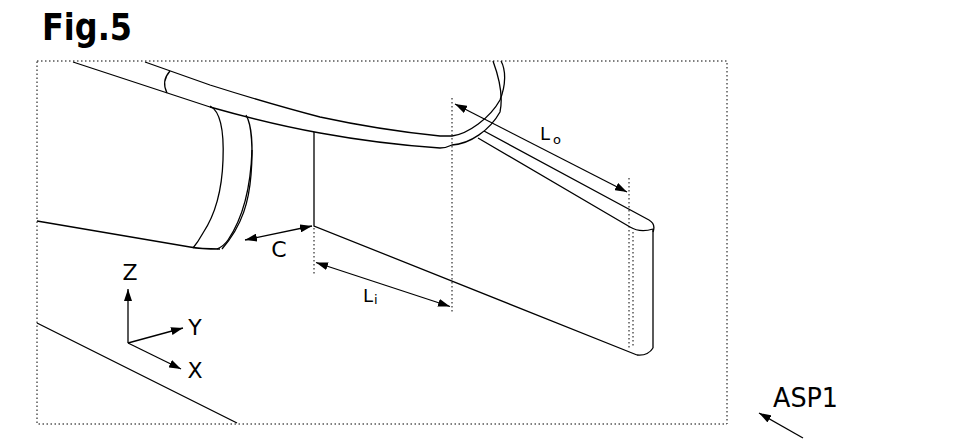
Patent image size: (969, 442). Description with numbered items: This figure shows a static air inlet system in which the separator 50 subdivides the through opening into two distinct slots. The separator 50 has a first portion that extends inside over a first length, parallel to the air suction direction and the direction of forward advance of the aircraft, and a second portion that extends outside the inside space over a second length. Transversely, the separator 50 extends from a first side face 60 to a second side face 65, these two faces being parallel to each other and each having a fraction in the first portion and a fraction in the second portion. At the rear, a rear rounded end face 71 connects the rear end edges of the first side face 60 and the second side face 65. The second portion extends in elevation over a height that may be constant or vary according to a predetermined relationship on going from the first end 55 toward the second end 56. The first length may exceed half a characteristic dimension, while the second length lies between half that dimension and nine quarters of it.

The separator 50 is at (562, 275).
The first end 55 is at (457, 262).
The second end 56 is at (643, 343).
The first side face 60 is at (556, 255).
The second side face 65 is at (649, 221).
The rear rounded end face 71 is at (653, 310).